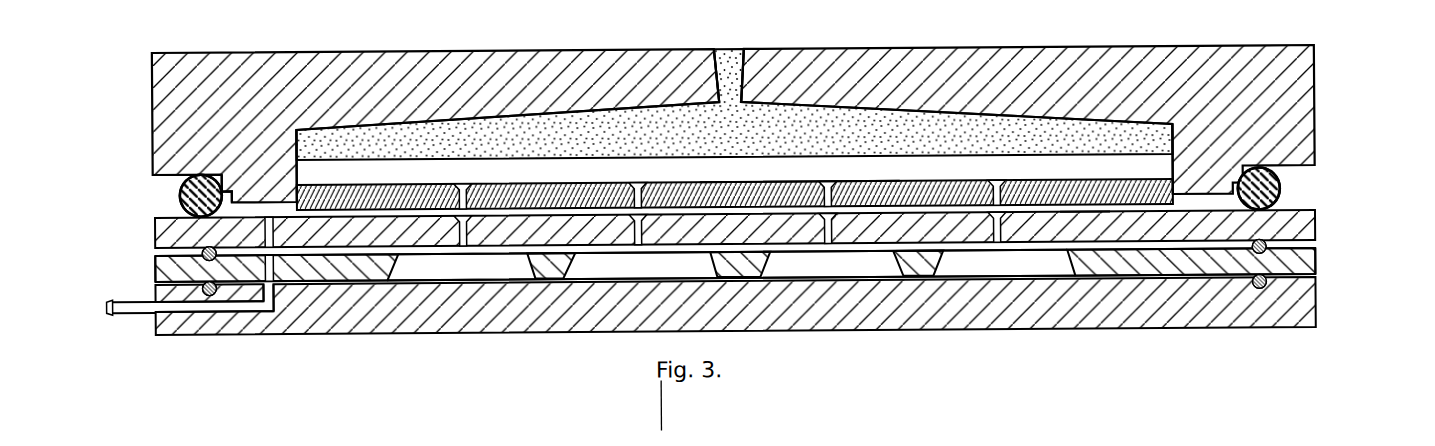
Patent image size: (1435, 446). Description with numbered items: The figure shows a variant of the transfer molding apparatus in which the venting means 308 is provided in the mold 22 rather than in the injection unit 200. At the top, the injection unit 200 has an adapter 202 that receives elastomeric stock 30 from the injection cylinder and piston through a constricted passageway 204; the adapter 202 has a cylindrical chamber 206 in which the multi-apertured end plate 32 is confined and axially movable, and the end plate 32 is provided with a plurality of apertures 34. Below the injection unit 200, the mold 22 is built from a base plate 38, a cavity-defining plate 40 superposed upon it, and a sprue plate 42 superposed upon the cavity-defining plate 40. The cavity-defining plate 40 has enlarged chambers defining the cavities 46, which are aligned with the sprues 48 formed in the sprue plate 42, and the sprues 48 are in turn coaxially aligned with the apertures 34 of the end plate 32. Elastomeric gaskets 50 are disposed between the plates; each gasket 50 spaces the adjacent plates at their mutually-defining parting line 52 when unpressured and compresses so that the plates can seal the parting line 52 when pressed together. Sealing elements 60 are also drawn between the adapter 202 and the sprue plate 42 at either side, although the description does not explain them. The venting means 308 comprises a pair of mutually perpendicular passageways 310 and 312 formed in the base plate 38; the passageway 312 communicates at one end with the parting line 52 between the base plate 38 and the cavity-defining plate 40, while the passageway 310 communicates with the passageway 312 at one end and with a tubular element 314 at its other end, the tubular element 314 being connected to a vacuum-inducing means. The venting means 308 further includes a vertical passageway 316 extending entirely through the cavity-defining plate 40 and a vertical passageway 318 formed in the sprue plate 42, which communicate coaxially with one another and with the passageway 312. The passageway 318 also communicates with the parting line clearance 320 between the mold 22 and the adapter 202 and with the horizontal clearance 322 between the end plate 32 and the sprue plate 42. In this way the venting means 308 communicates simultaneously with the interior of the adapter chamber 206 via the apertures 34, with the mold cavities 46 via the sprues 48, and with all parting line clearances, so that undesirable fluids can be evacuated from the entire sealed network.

The injection unit 200 is at (757, 114).
The adapter 202 is at (1287, 87).
The constricted passageway 204 is at (728, 56).
The cylindrical chamber 206 is at (1165, 174).
The elastomeric stock 30 is at (452, 132).
The end plate 32 is at (800, 194).
The apertures 34 is at (458, 199).
The parting line clearance 320 is at (241, 206).
The horizontal clearance 322 is at (1082, 218).
The O-ring seal 60 is at (180, 198).
The mold 22 is at (734, 282).
The sprue plate 42 is at (775, 231).
The sprues 48 is at (455, 235).
The vertical passageway 318 is at (272, 233).
The cavity-defining plate 40 is at (776, 312).
The parting line 52 is at (548, 278).
The cavities 46 is at (473, 275).
The vertical passageway 316 is at (272, 269).
The base plate 38 is at (727, 321).
The passageway 312 is at (272, 299).
The passageway 310 is at (193, 307).
The tubular element 314 is at (140, 315).
The venting means 308 is at (113, 318).
The elastomeric gaskets 50 is at (204, 284).